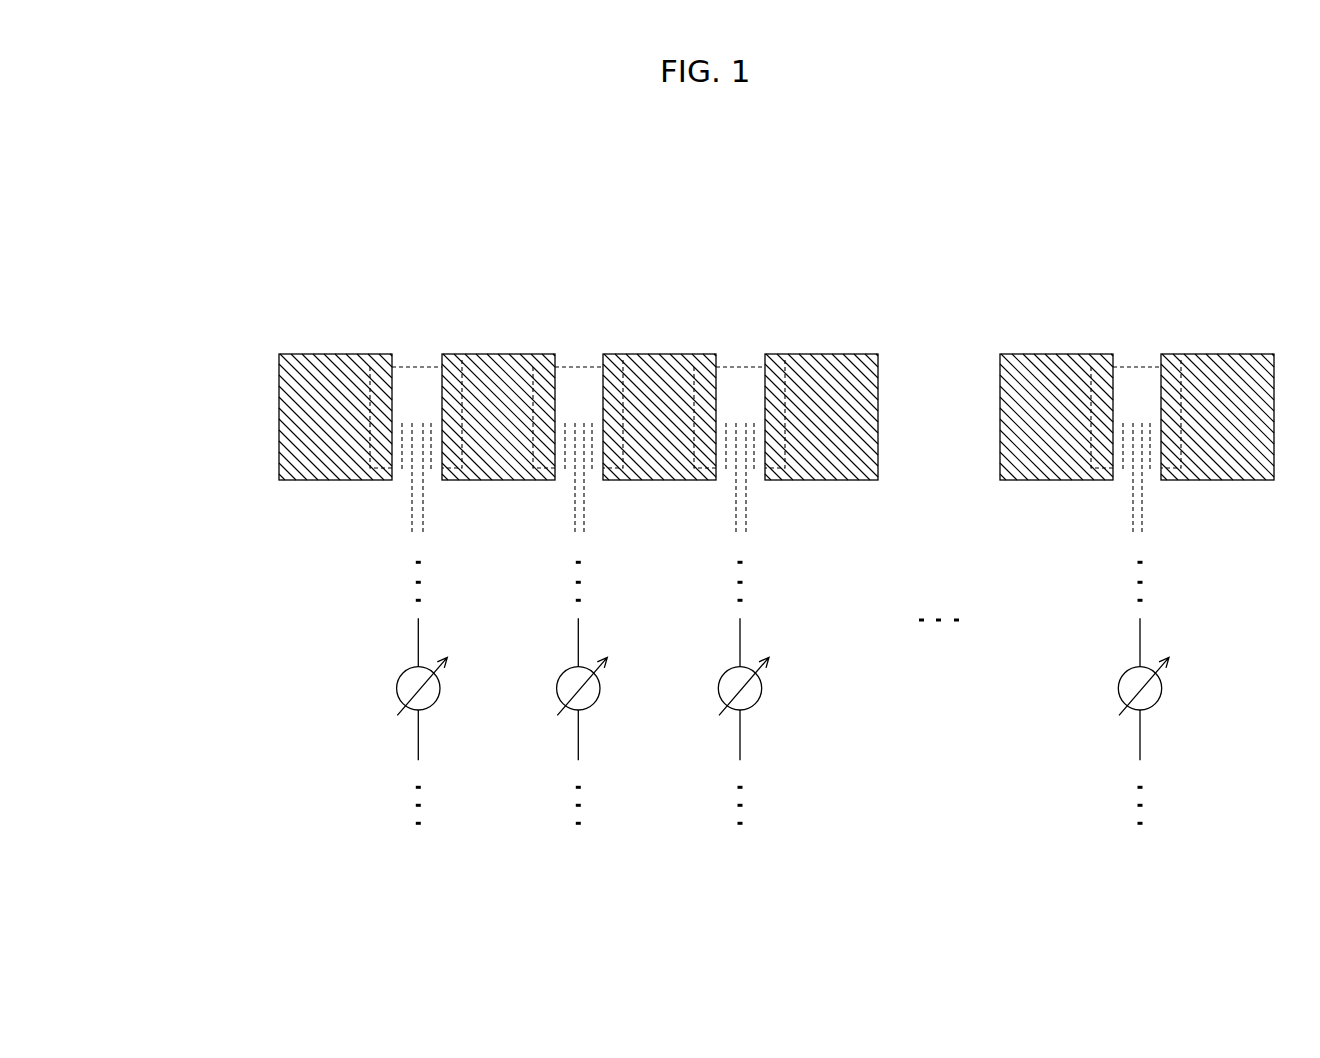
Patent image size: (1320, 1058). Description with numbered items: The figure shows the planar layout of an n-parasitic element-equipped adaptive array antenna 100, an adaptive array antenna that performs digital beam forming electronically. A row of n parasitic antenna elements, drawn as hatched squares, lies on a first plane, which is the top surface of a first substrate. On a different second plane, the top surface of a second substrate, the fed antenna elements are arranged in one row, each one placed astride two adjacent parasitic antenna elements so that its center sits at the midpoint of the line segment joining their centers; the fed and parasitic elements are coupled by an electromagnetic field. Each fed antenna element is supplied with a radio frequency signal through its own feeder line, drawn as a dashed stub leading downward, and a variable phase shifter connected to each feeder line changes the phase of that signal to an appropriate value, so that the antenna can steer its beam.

The n-parasitic element-equipped adaptive array antenna 100 is at (1005, 208).